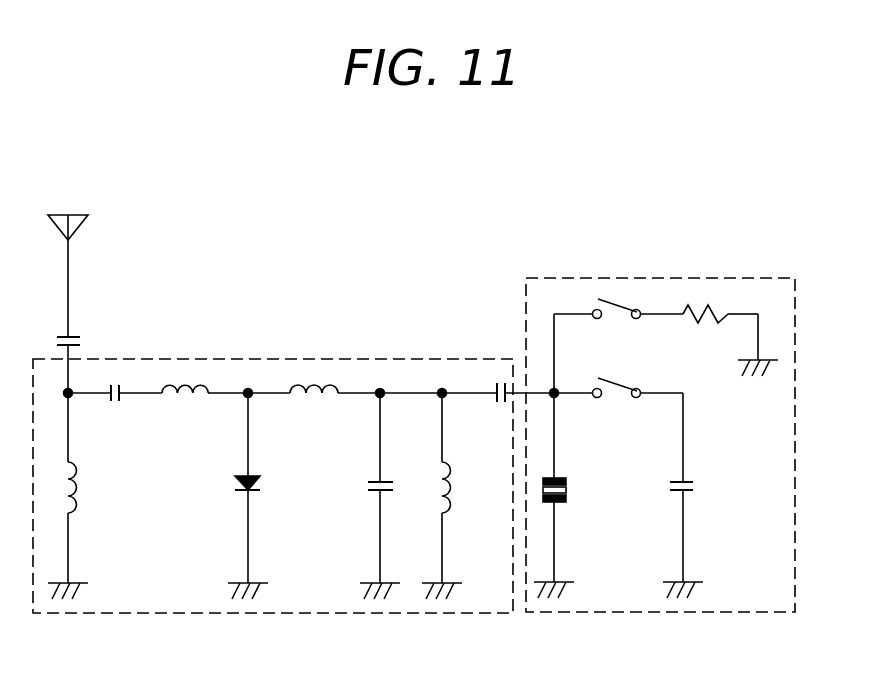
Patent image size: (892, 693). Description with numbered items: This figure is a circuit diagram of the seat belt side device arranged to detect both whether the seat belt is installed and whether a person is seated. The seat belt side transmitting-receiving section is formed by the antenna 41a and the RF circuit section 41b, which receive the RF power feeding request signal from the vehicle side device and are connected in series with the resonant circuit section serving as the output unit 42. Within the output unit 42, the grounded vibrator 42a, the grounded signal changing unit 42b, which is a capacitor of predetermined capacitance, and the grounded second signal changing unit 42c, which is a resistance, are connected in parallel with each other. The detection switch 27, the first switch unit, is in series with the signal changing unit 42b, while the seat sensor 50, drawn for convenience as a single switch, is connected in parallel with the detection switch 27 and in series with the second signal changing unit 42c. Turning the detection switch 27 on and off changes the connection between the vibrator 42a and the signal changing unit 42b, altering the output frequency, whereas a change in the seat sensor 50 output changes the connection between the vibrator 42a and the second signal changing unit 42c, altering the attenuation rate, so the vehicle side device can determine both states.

The antenna 41a is at (70, 251).
The RF circuit section 41b is at (280, 356).
The output unit 42 is at (668, 278).
The seat sensor 50 is at (618, 299).
The second signal changing unit 42c is at (722, 308).
The detection switch 27 is at (617, 379).
The vibrator 42a is at (566, 493).
The signal changing unit 42b is at (684, 493).